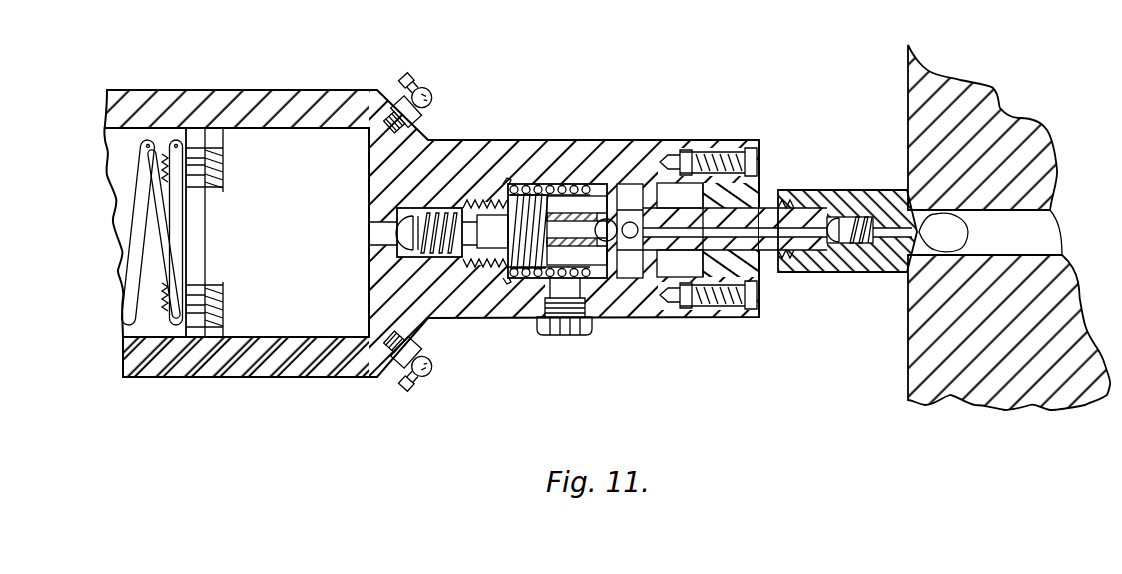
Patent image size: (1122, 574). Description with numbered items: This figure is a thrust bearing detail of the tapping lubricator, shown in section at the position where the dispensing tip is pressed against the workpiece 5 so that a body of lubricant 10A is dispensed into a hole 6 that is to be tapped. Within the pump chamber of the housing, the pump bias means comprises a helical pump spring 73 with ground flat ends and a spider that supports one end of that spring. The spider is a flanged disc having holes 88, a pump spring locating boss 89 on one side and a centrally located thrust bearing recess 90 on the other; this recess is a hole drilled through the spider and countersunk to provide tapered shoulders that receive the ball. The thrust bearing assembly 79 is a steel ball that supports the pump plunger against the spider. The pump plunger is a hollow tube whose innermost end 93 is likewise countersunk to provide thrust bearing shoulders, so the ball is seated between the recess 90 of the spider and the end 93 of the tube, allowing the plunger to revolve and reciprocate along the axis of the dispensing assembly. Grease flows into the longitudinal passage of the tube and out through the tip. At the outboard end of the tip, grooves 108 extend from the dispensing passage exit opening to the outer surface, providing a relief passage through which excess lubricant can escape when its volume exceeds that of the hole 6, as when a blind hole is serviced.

The workpiece 5 is at (1057, 160).
The hole 6 is at (1060, 228).
The body of lubricant 10A is at (943, 232).
The pump spring 73 is at (574, 268).
The thrust bearing assembly 79 is at (628, 192).
The holes 88 is at (557, 257).
The pump spring locating boss 89 is at (565, 186).
The thrust bearing recess 90 is at (607, 250).
The innermost end of hollow tube 93 is at (609, 222).
The grooves 108 is at (893, 272).